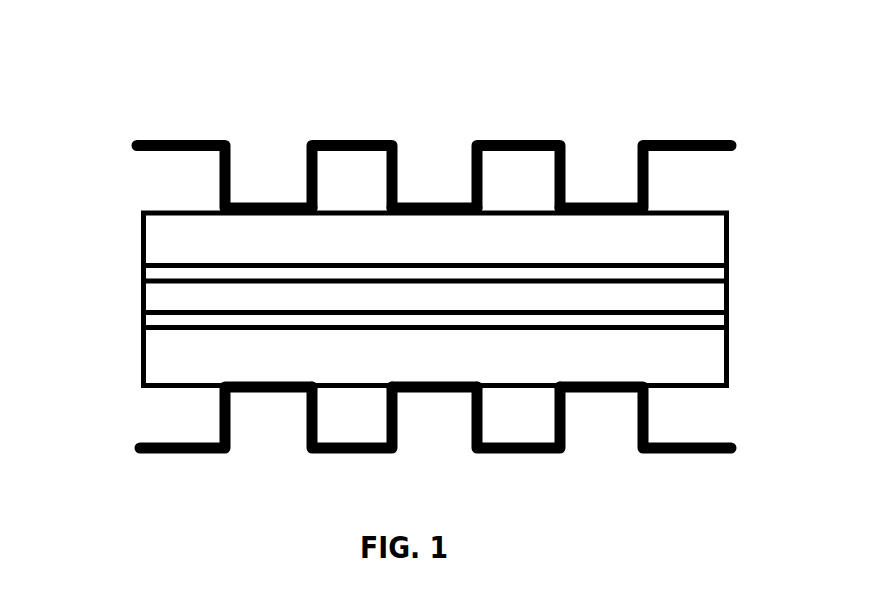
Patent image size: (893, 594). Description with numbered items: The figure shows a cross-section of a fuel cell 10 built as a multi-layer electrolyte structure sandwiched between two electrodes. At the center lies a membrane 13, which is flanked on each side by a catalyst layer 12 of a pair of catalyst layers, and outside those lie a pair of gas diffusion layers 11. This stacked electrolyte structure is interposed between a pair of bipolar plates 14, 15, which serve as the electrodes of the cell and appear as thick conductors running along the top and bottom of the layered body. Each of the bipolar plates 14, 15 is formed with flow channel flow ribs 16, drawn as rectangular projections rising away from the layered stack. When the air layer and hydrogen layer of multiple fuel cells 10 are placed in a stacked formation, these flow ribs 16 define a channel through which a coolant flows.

The fuel cell 10 is at (94, 99).
The gas diffusion layer 11 is at (142, 243).
The catalyst layer 12 is at (730, 280).
The membrane 13 is at (142, 298).
The bipolar plate 14 is at (135, 145).
The bipolar plate 15 is at (140, 447).
The flow channel flow ribs 16 is at (267, 202).